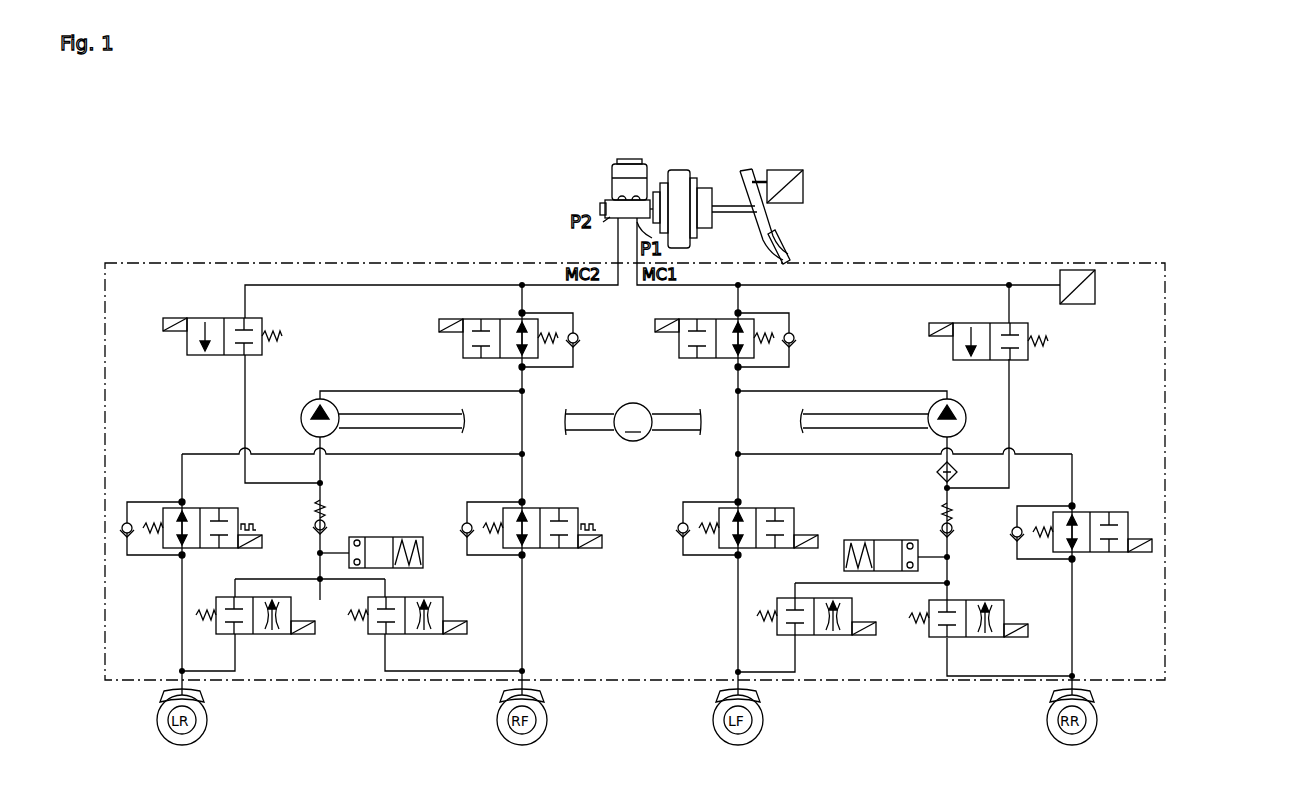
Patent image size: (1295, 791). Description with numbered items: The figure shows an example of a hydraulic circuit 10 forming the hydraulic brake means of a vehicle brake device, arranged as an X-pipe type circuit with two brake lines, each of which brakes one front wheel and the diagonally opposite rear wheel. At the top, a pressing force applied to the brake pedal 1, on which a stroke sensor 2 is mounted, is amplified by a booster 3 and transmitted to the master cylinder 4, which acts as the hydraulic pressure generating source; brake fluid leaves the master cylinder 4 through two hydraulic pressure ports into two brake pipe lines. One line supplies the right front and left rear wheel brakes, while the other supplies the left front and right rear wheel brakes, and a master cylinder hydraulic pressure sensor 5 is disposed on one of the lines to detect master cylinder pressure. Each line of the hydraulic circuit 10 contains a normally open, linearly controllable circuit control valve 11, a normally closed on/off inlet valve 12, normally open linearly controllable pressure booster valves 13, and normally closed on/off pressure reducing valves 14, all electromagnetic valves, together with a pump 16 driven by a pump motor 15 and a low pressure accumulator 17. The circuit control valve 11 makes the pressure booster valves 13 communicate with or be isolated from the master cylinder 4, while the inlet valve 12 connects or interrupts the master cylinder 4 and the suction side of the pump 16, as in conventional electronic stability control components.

The brake pedal 1 is at (766, 222).
The stroke sensor 2 is at (796, 168).
The booster 3 is at (678, 170).
The master cylinder 4 is at (610, 196).
The master cylinder hydraulic pressure sensor 5 is at (1080, 268).
The hydraulic circuit 10 is at (1166, 420).
The circuit control valve 11 is at (498, 319).
The inlet valve 12 is at (233, 318).
The pressure booster valves 13 is at (212, 508).
The pressure reducing valves 14 is at (243, 634).
The pump motor 15 is at (629, 403).
The pump 16 is at (308, 400).
The low pressure accumulator 17 is at (372, 537).